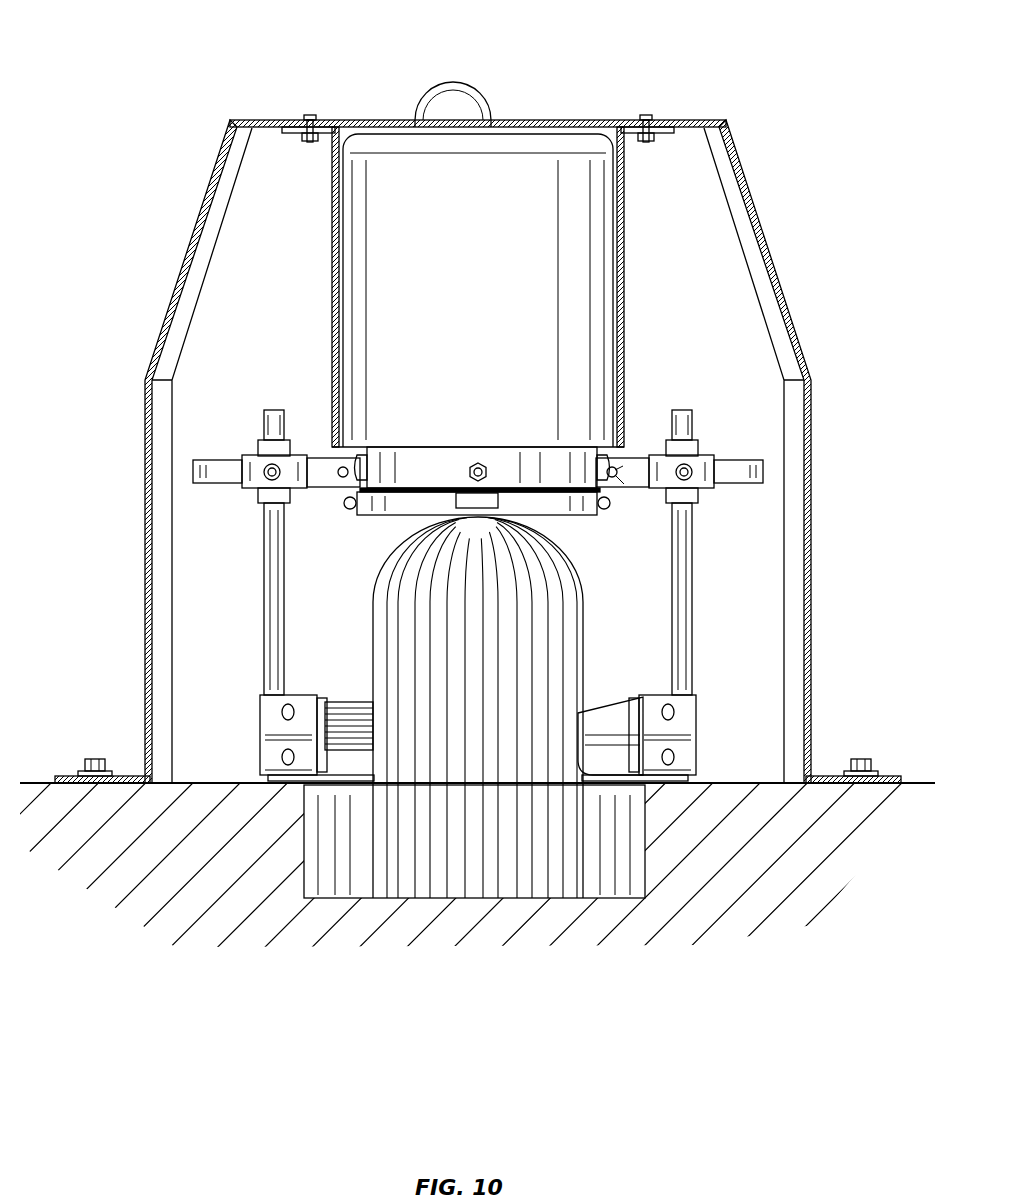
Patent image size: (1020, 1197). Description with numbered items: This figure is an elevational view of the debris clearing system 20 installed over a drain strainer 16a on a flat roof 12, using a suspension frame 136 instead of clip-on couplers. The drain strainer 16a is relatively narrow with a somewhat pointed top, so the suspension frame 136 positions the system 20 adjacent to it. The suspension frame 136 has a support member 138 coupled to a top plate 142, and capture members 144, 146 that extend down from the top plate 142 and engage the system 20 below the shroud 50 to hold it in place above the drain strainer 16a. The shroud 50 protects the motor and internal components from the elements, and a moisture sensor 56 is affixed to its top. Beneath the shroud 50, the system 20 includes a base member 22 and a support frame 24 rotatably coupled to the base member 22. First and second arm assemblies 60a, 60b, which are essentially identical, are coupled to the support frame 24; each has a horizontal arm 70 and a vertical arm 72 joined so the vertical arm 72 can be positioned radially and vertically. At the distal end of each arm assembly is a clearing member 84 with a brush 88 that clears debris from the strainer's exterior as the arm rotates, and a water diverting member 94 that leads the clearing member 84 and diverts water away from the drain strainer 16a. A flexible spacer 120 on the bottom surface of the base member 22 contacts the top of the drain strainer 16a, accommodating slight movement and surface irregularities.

The flat roof 12 is at (906, 783).
The drain strainer 16a is at (379, 571).
The system 20 is at (590, 94).
The base member 22 is at (437, 470).
The support frame 24 is at (508, 458).
The shroud 50 is at (476, 287).
The moisture sensor 56 is at (437, 100).
The first arm assembly 60a is at (228, 452).
The second arm assembly 60b is at (734, 452).
The horizontal arm 70 is at (205, 483).
The vertical arm 72 is at (264, 590).
The clearing member 84 is at (259, 732).
The brush 88 is at (345, 700).
The water diverting member 94 is at (606, 700).
The flexible spacer 120 is at (568, 514).
The suspension frame 136 is at (227, 117).
The support member 138 is at (812, 500).
The top plate 142 is at (298, 120).
The capture member 144 is at (334, 274).
The capture member 146 is at (624, 286).